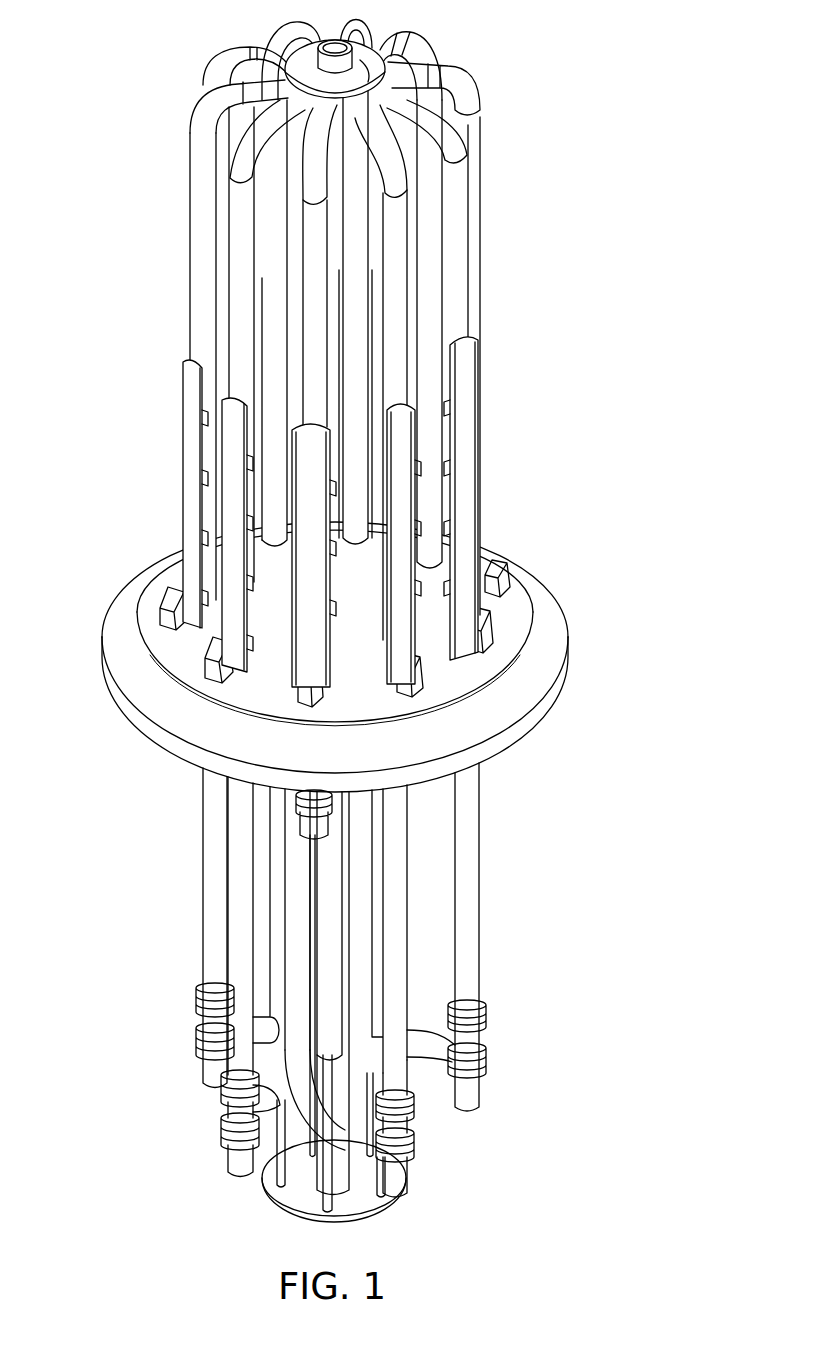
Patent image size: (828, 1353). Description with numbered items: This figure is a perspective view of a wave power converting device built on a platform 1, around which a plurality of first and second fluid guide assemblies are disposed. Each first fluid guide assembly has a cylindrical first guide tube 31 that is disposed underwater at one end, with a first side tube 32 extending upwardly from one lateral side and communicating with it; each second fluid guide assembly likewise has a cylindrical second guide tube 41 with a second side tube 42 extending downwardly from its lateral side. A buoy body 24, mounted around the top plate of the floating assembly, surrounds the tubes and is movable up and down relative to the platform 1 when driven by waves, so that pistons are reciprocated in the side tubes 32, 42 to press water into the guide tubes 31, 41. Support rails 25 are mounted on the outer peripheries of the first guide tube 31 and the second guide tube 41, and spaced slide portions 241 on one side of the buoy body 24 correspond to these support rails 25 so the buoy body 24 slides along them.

The platform 1 is at (405, 45).
The first guide tube 31 is at (233, 295).
The second guide tube 41 is at (308, 340).
The support rail 25 is at (480, 418).
The buoy body 24 is at (528, 562).
The slide portion 241 is at (500, 620).
The first side tube 32 is at (292, 878).
The second side tube 42 is at (324, 915).